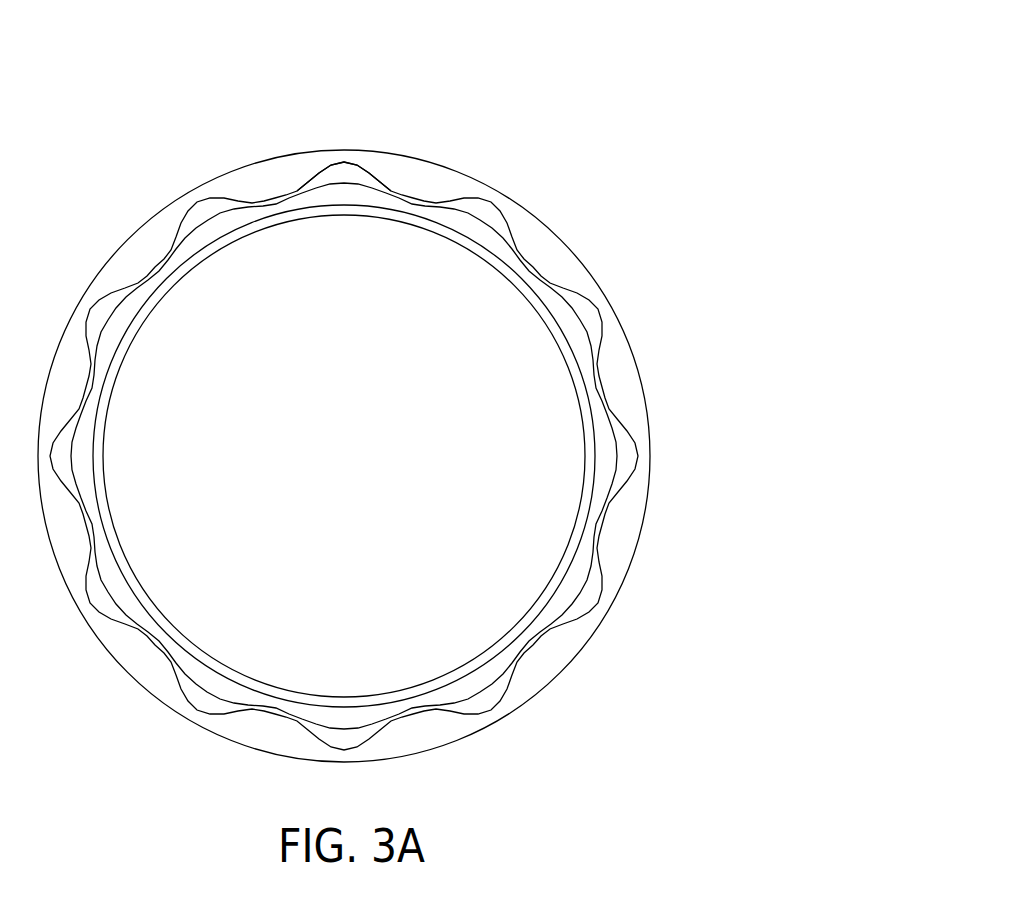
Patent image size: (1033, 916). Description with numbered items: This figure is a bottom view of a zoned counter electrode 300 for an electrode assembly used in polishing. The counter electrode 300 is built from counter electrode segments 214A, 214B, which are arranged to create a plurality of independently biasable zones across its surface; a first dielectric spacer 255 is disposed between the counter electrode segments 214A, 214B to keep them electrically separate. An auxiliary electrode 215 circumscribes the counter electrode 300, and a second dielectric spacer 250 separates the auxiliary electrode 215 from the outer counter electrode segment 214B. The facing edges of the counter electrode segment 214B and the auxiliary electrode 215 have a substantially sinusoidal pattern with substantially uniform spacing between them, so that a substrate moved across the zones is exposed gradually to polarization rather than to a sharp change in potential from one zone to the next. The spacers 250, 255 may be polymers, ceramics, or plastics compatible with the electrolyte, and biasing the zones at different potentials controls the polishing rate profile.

The counter electrode 300 is at (494, 98).
The auxiliary electrode 215 is at (625, 537).
The second dielectric spacer 250 is at (585, 603).
The first dielectric spacer 255 is at (483, 662).
The counter electrode segment 214A is at (540, 467).
The counter electrode segment 214B is at (324, 197).